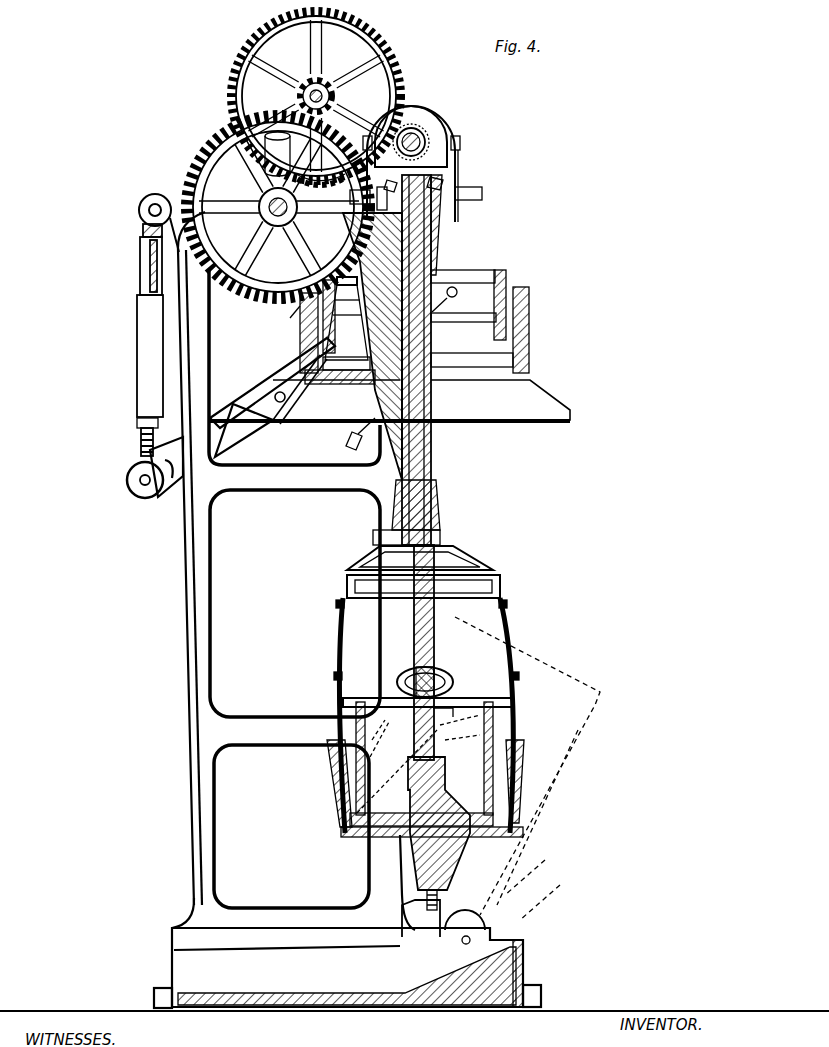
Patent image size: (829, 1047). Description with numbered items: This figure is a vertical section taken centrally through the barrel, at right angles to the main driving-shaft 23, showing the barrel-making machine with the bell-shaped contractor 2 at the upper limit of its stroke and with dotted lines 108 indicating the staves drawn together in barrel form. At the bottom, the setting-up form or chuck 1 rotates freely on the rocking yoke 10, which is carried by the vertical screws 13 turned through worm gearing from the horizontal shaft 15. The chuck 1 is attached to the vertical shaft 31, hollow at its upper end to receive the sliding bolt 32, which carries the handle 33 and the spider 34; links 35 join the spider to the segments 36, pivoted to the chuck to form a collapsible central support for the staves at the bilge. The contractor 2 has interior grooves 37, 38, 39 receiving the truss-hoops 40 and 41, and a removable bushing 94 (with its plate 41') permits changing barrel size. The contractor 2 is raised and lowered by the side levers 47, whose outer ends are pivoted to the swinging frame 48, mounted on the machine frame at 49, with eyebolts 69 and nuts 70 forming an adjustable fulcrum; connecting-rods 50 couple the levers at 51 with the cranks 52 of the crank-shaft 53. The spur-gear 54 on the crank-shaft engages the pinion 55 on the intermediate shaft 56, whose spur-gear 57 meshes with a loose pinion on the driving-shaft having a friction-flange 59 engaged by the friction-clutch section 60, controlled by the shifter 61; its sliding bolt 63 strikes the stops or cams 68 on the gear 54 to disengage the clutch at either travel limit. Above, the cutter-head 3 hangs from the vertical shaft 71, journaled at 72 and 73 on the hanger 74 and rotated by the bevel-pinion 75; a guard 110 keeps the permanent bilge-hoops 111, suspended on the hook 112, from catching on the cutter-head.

The setting-up form or chuck 1 is at (347, 610).
The bell-shaped contractor 2 is at (390, 400).
The cutter-head 3 is at (423, 595).
The rocking yoke 10 is at (446, 833).
The vertical screws 13 is at (420, 935).
The horizontal shaft 15 is at (462, 943).
The main driving-shaft 23 is at (411, 129).
The vertical shaft 31 is at (408, 720).
The sliding bolt 32 is at (431, 682).
The handle 33 is at (425, 673).
The spider 34 is at (452, 713).
The links 35 is at (428, 693).
The segments 36 is at (419, 752).
The recess or groove 37 is at (347, 292).
The recess or groove 38 is at (347, 322).
The recess or groove 39 is at (346, 362).
The truss-hoop 40 is at (336, 604).
The truss-hoop 41 is at (413, 677).
The plate 41' is at (463, 323).
The side levers 47 is at (242, 417).
The swinging frame 48 is at (150, 320).
The pivot of swinging frame 49 is at (147, 223).
The connecting-rods 50 is at (285, 319).
The connection of connecting-rods to side levers 51 is at (291, 389).
The cranks 52 is at (305, 158).
The crank-shaft 53 is at (263, 218).
The spur-gear 54 is at (215, 145).
The pinion 55 is at (345, 92).
The intermediate shaft 56 is at (310, 84).
The spur-gear 57 is at (400, 30).
The friction-flange 59 is at (438, 115).
The friction-clutch section 60 is at (413, 134).
The shifter 61 is at (410, 185).
The sliding bolt 63 is at (468, 184).
The stops or cams 68 is at (284, 200).
The eyebolts 69 is at (141, 449).
The nuts 70 is at (137, 423).
The vertical shaft 71 is at (428, 467).
The journal 72 is at (440, 510).
The journal 73 is at (437, 237).
The hanger 74 is at (351, 346).
The bevel-pinion 75 is at (458, 190).
The removable bushing 94 is at (508, 275).
The dotted lines 108 is at (469, 759).
The guard 110 is at (422, 550).
The permanent bilge-hoops 111 is at (354, 434).
The hook 112 is at (461, 298).